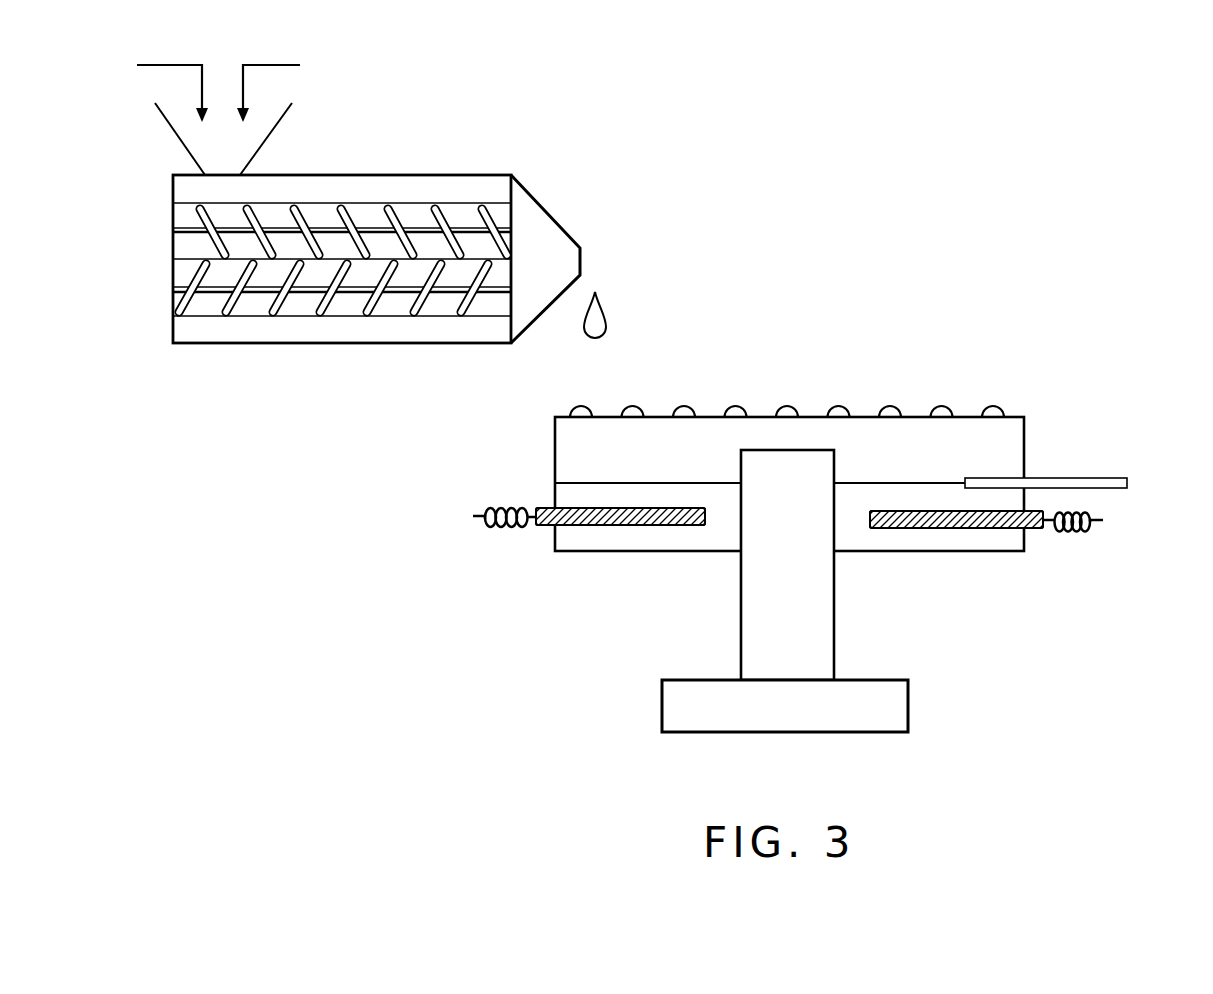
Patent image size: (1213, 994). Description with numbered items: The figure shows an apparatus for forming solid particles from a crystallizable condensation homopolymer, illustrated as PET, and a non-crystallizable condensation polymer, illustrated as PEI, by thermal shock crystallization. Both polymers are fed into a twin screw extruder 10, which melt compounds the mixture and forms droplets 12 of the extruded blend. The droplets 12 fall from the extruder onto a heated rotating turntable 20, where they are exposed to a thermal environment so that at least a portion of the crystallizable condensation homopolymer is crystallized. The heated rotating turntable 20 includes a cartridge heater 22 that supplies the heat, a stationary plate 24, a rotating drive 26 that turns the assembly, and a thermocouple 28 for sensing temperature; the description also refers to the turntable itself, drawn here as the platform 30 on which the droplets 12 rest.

The twin screw extruder 10 is at (232, 368).
The droplets 12 is at (633, 405).
The heated rotating turntable 20 is at (813, 526).
The cartridge heater 22 is at (525, 547).
The stationary plate 24 is at (642, 551).
The rotating drive 26 is at (834, 603).
The thermocouple 28 is at (1125, 479).
The platform 30 is at (1024, 437).